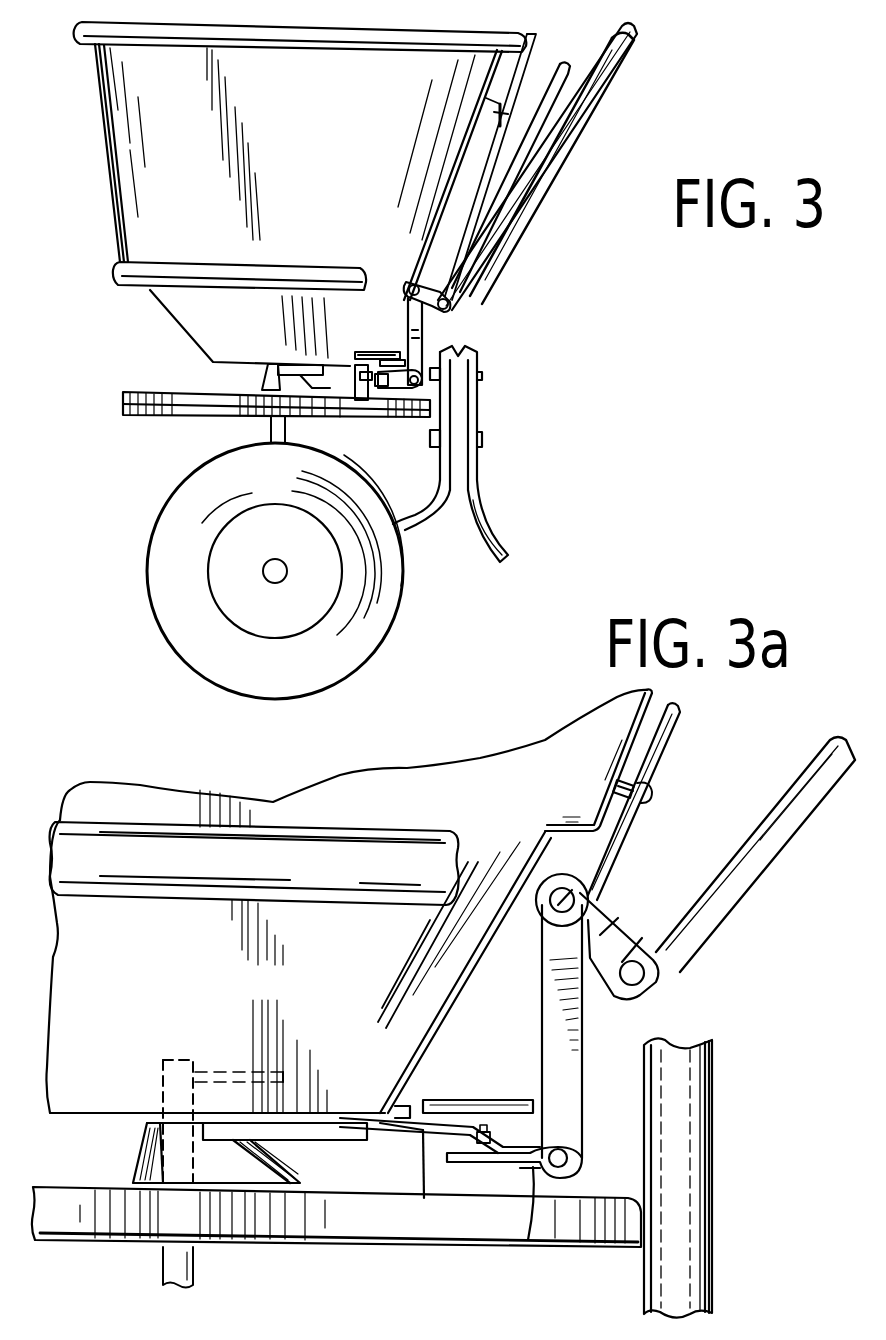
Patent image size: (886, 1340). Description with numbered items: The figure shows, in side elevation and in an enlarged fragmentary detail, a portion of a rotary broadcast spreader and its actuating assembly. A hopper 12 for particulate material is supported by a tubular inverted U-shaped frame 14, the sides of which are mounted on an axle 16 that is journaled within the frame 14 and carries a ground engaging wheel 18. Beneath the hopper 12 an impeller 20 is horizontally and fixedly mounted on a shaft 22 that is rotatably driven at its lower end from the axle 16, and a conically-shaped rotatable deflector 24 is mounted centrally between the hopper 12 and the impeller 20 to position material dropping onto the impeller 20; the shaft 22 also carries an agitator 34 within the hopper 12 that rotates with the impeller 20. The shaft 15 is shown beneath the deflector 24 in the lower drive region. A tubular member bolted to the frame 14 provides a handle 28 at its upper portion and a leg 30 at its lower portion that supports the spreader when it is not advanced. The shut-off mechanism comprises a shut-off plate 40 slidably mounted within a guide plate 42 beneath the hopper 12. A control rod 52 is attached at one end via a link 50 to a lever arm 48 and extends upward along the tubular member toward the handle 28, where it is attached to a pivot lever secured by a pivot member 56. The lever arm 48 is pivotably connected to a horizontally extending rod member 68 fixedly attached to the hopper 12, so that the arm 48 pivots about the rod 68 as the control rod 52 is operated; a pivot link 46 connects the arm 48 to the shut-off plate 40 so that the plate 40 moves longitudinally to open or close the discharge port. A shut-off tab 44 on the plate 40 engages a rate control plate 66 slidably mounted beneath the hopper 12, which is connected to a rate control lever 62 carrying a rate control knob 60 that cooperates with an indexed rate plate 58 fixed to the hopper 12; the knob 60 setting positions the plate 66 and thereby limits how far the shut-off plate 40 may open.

In FIG. 3, the hopper 12 is at (110, 165).
In FIG. 3a, the hopper 12 is at (438, 978).
In FIG. 3, the frame 14 is at (122, 288).
In FIG. 3a, the frame 14 is at (331, 906).
In FIG. 3, the spindle shaft 15 is at (290, 432).
In FIG. 3, the axle 16 is at (275, 571).
In FIG. 3, the ground engaging wheel 18 is at (398, 610).
In FIG. 3a, the impeller 20 is at (345, 1245).
In FIG. 3a, the shaft 22 is at (190, 1060).
In FIG. 3, the rotatable deflector 24 is at (268, 378).
In FIG. 3a, the rotatable deflector 24 is at (310, 1177).
In FIG. 3a, the handle 28 is at (632, 826).
In FIG. 3, the leg 30 is at (504, 552).
In FIG. 3a, the agitator 34 is at (247, 1077).
In FIG. 3, the shut-off plate 40 is at (442, 433).
In FIG. 3a, the shut-off plate 40 is at (423, 1135).
In FIG. 3, the guide plate 42 is at (362, 380).
In FIG. 3a, the guide plate 42 is at (338, 1130).
In FIG. 3a, the shut-off tab 44 is at (415, 1060).
In FIG. 3, the pivot link 46 is at (410, 408).
In FIG. 3a, the pivot link 46 is at (530, 1192).
In FIG. 3, the lever arm 48 is at (428, 326).
In FIG. 3a, the lever arm 48 is at (570, 1028).
In FIG. 3, the link 50 is at (440, 256).
In FIG. 3a, the link 50 is at (610, 930).
In FIG. 3a, the control rod 52 is at (765, 870).
In FIG. 3a, the pivot member 56 is at (648, 790).
In FIG. 3, the rate plate 58 is at (488, 160).
In FIG. 3, the rate control knob 60 is at (486, 116).
In FIG. 3, the rate control lever 62 is at (468, 200).
In FIG. 3, the rate control plate 66 is at (416, 362).
In FIG. 3a, the rate control plate 66 is at (535, 1110).
In FIG. 3, the rod member 68 is at (424, 240).
In FIG. 3a, the rod member 68 is at (582, 892).